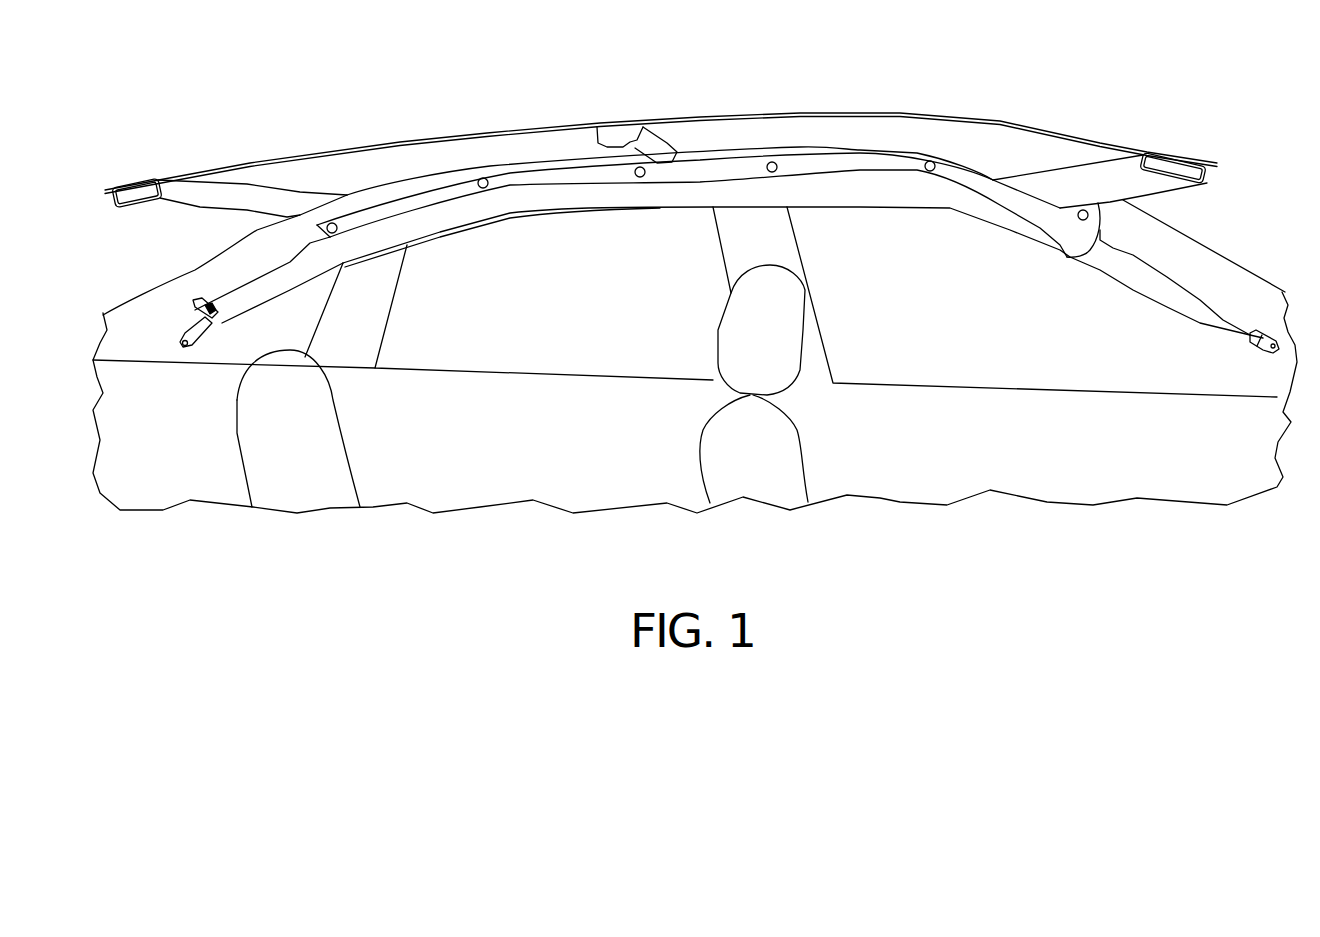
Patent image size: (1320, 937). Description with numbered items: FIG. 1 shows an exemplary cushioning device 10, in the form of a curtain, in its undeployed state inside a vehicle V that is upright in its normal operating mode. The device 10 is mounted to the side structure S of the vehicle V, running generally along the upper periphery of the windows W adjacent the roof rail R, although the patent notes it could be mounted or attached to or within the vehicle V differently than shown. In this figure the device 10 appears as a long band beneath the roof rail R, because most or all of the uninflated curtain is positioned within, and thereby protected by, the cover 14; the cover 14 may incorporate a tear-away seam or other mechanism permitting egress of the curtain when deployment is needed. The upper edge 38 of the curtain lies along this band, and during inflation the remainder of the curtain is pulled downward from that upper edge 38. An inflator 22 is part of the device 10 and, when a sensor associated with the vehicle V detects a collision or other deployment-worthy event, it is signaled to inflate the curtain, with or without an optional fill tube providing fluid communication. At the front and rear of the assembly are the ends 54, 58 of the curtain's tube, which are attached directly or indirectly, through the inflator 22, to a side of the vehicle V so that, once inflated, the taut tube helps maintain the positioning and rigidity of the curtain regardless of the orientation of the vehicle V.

The device 10 is at (422, 455).
The cover 14 is at (897, 202).
The inflator 22 is at (182, 311).
The upper edge 38 is at (828, 163).
The end 54 is at (206, 318).
The end 58 is at (1268, 340).
The roof rail R is at (357, 172).
The side structure S is at (222, 276).
The vehicle V is at (1032, 453).
The windows W is at (810, 302).